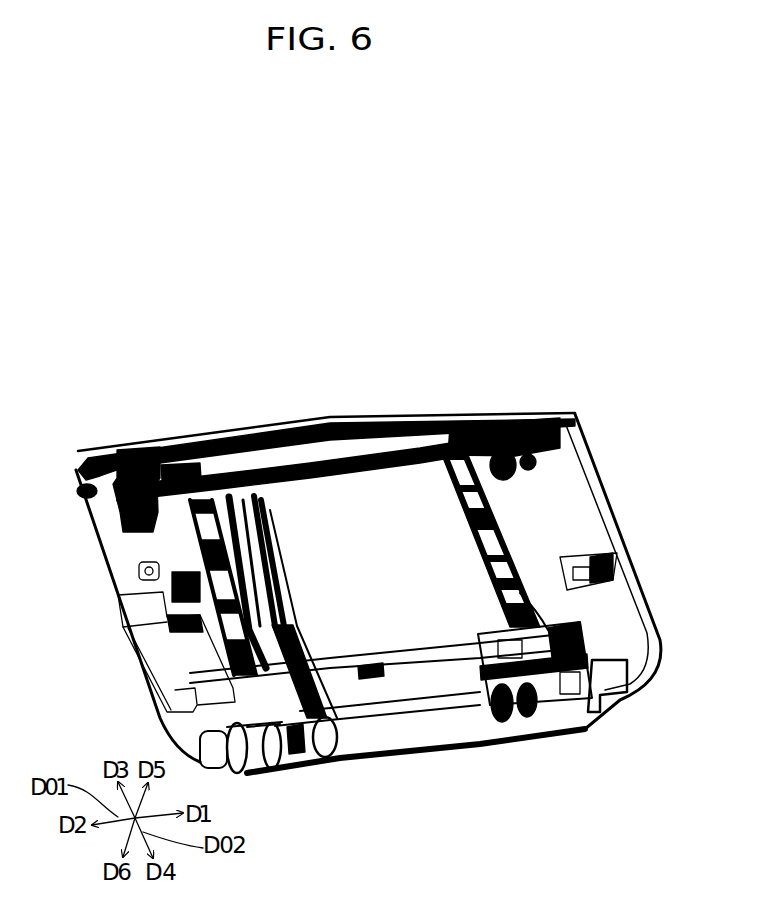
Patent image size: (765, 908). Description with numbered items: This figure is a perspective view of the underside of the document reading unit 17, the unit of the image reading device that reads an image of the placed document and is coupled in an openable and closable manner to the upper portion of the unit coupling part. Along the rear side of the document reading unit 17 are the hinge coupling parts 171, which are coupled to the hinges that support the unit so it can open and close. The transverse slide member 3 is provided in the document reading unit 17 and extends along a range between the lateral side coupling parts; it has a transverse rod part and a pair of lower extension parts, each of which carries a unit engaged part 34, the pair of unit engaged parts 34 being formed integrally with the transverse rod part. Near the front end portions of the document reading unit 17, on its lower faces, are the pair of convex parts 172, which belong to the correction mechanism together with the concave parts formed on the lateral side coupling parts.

The document reading unit 17 is at (130, 398).
The transverse slide member 3 is at (326, 461).
The unit engaged part 34 is at (113, 509).
The convex part 172 is at (127, 527).
The hinge coupling part 171 is at (307, 768).